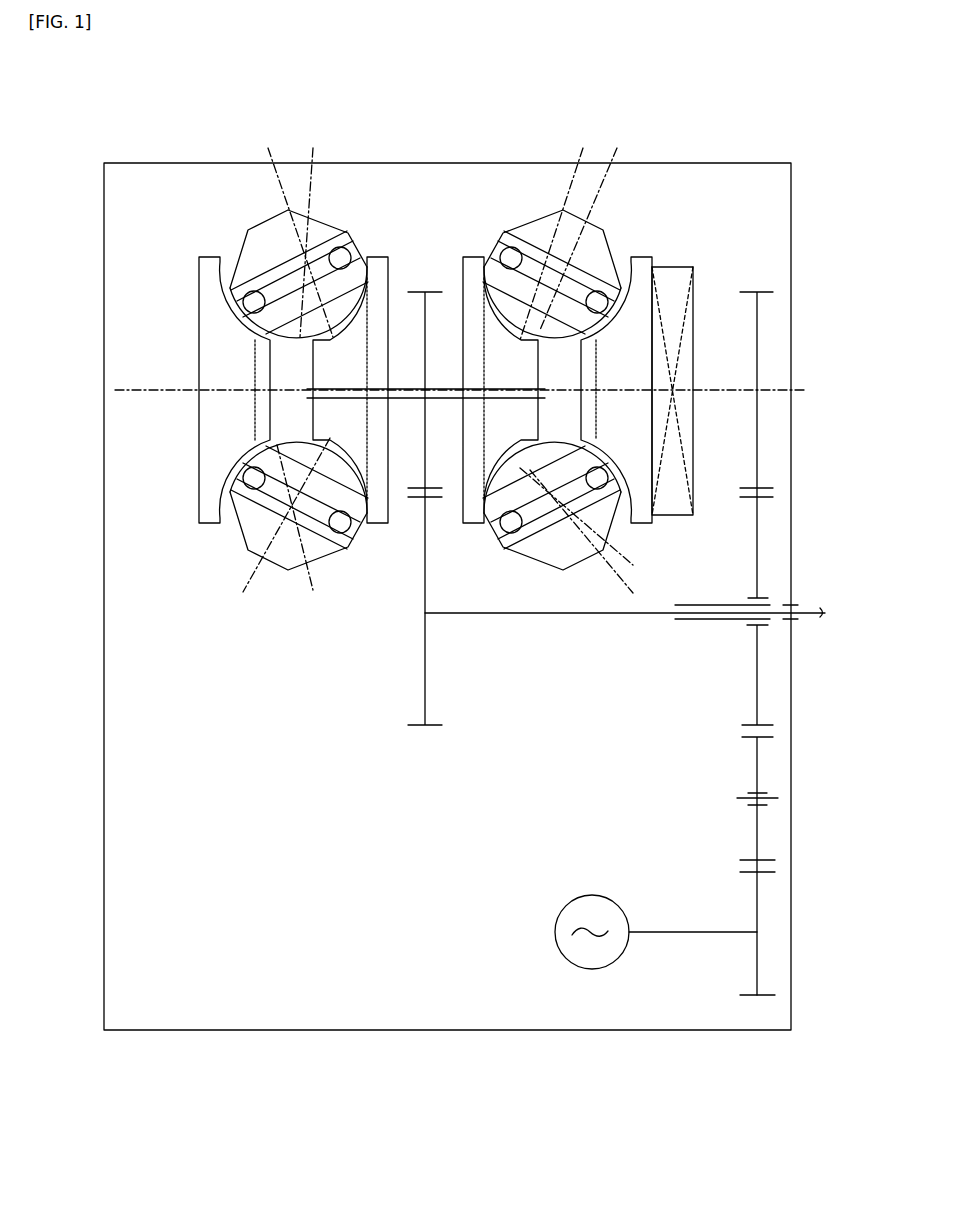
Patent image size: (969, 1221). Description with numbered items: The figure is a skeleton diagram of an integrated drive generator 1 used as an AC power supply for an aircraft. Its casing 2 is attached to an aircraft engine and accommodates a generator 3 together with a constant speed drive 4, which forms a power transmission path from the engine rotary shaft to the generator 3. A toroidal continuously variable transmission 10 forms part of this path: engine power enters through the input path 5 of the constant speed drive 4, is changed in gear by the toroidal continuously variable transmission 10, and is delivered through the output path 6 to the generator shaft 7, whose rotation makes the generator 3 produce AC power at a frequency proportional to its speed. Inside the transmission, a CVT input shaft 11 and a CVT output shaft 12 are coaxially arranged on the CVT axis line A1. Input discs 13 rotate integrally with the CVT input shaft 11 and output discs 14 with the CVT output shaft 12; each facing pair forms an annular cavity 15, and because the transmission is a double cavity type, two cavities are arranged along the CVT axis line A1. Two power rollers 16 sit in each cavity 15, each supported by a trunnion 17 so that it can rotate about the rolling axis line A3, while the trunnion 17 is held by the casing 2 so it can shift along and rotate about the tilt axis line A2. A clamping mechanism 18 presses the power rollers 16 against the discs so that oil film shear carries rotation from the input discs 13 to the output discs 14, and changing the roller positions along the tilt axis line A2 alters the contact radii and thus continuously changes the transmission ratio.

The integrated drive generator 1 is at (432, 1052).
The casing 2 is at (467, 1032).
The generator 3 is at (563, 957).
The constant speed drive 4 is at (644, 706).
The input path 5 is at (470, 716).
The output path 6 is at (750, 1007).
The generator shaft 7 is at (645, 937).
The toroidal continuously variable transmission 10 is at (400, 235).
The CVT input shaft 11 is at (433, 386).
The CVT output shaft 12 is at (413, 386).
The input disc 13 is at (385, 524).
The output disc 14 is at (207, 524).
The annular cavity 15 is at (230, 288).
The power roller 16 is at (350, 254).
The trunnion 17 is at (258, 242).
The clamping mechanism 18 is at (694, 445).
The CVT axis line A1 is at (808, 386).
The tilt axis line A2 is at (469, 367).
The rolling axis line A3 is at (444, 369).